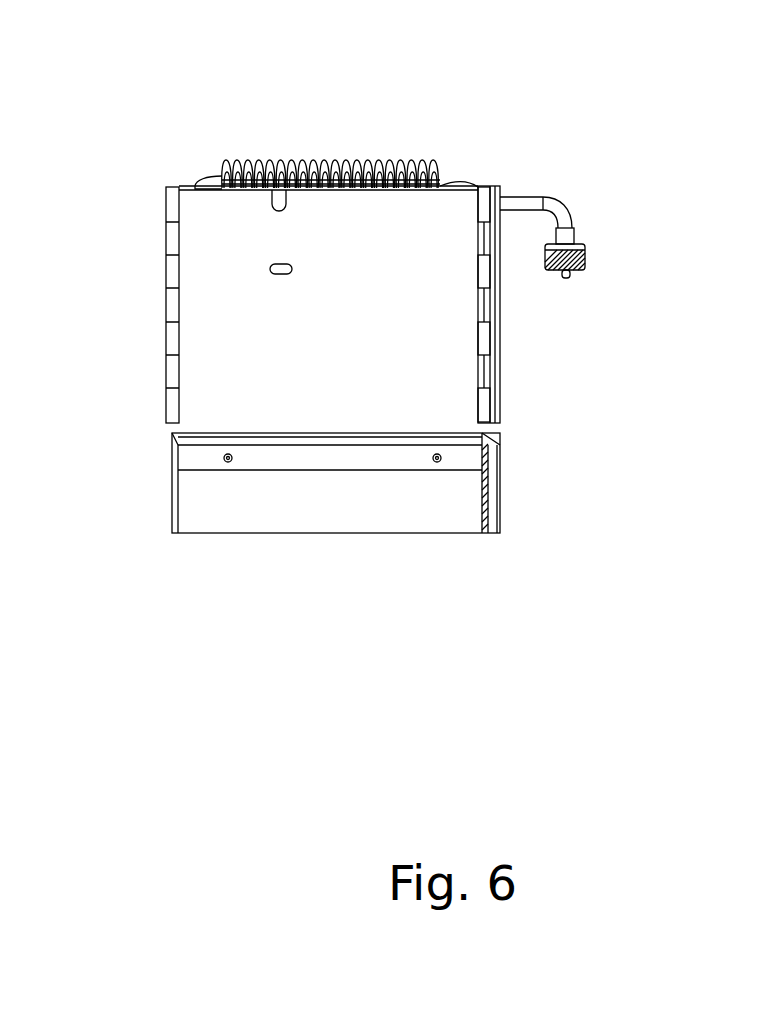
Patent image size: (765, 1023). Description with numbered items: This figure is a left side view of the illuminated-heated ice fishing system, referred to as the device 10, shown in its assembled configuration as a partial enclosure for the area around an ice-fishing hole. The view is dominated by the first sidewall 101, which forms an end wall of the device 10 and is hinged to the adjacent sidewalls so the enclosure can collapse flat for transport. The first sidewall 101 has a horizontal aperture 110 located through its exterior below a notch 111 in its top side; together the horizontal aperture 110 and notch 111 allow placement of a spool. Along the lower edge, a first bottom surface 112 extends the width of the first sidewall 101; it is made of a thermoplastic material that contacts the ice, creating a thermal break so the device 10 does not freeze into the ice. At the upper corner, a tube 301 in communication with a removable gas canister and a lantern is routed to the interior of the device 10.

The device 10 is at (128, 84).
The first sidewall 101 is at (222, 398).
The horizontal aperture 110 is at (270, 270).
The notch 111 is at (270, 207).
The first bottom surface 112 is at (222, 503).
The tube 301 is at (563, 207).